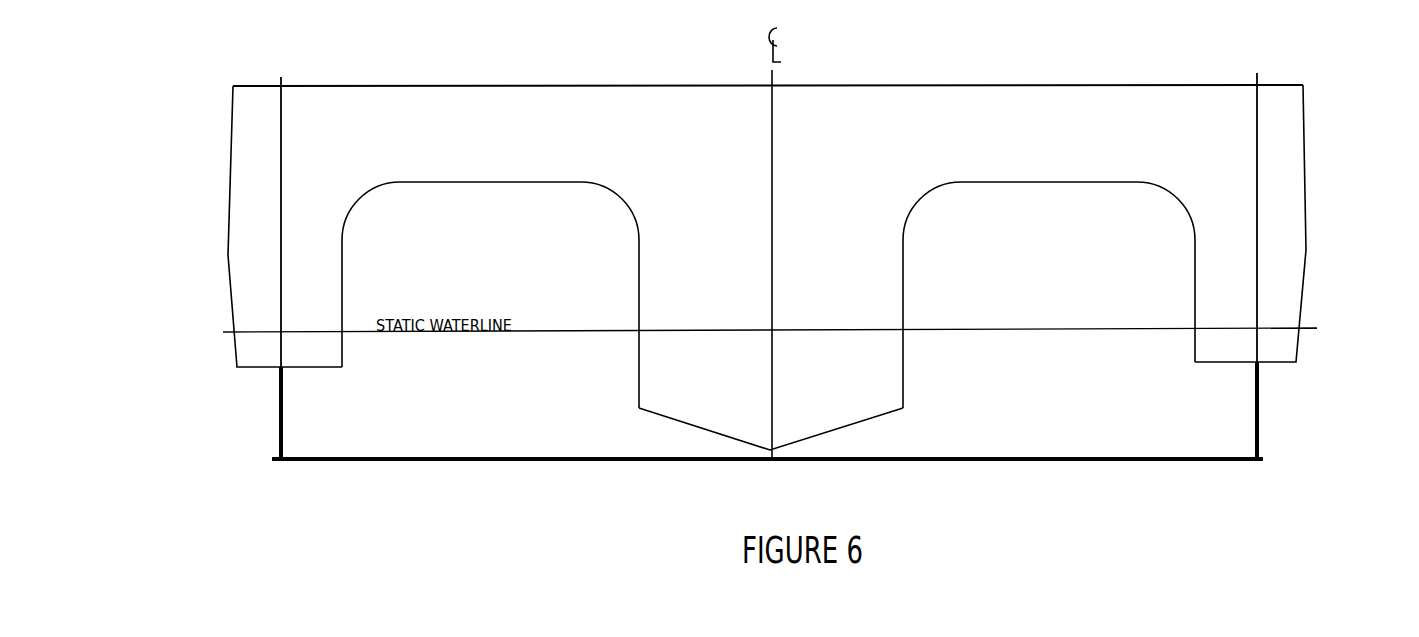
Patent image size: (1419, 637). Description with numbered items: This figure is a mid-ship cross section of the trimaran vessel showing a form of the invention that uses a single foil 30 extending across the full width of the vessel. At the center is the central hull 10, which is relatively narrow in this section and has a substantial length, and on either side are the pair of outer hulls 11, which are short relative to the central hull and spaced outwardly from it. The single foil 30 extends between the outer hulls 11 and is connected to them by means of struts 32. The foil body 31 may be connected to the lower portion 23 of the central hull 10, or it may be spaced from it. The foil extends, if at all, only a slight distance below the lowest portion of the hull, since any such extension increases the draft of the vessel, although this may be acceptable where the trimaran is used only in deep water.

The outer hulls 11 is at (767, 220).
The central hull 10 is at (768, 295).
The lower portion of the central hull 23 is at (771, 451).
The struts 32 is at (210, 414).
The foil body 31 is at (522, 489).
The single foil 30 is at (1017, 443).